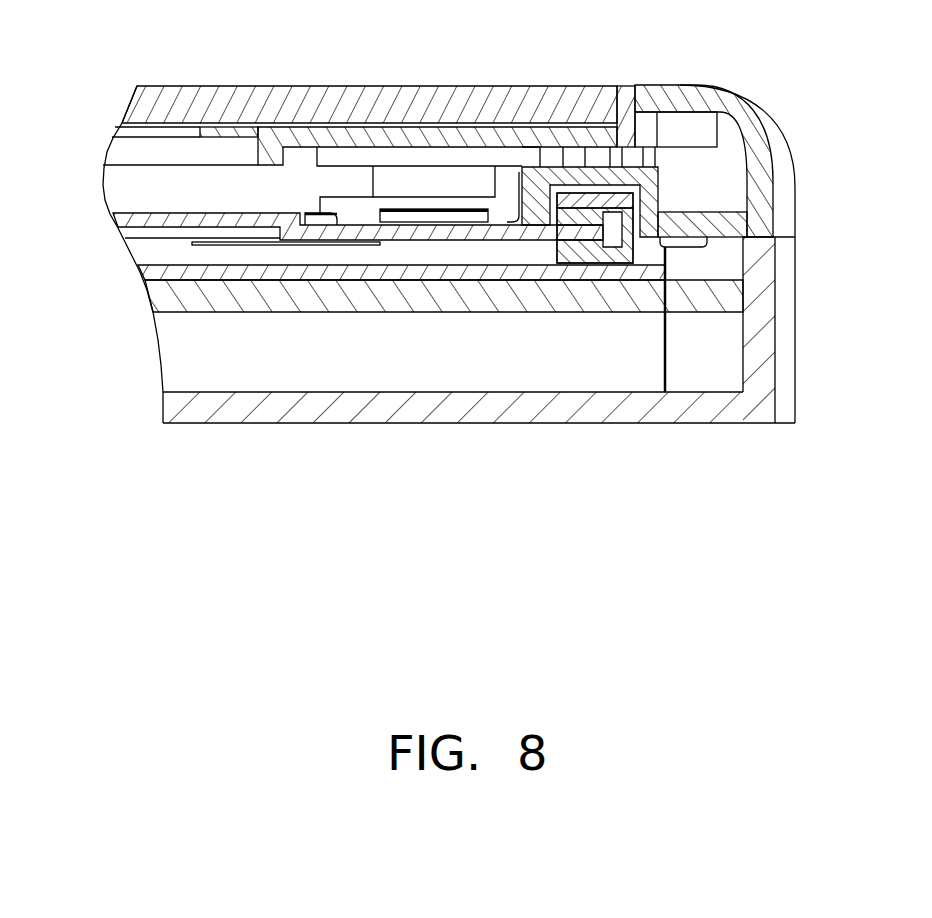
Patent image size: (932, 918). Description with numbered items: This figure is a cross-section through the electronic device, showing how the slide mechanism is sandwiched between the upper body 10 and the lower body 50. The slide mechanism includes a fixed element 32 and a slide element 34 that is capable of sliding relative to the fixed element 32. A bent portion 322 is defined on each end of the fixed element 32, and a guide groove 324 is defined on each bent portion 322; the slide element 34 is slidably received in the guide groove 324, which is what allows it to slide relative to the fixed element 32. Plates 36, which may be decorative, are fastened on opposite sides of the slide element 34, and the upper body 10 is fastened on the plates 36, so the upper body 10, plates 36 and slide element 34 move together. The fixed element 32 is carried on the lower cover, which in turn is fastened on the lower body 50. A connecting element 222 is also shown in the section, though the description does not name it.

The upper body 10 is at (738, 130).
The connector 222 is at (603, 178).
The fixed element 32 is at (292, 272).
The slide element 34 is at (403, 233).
The plates 36 is at (703, 223).
The lower body 50 is at (465, 298).
The bent portion 322 is at (570, 253).
The guide groove 324 is at (627, 260).